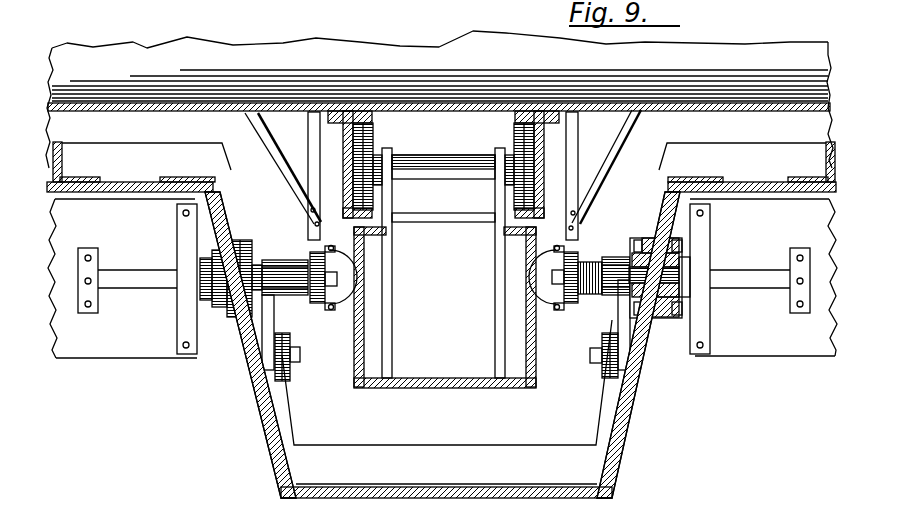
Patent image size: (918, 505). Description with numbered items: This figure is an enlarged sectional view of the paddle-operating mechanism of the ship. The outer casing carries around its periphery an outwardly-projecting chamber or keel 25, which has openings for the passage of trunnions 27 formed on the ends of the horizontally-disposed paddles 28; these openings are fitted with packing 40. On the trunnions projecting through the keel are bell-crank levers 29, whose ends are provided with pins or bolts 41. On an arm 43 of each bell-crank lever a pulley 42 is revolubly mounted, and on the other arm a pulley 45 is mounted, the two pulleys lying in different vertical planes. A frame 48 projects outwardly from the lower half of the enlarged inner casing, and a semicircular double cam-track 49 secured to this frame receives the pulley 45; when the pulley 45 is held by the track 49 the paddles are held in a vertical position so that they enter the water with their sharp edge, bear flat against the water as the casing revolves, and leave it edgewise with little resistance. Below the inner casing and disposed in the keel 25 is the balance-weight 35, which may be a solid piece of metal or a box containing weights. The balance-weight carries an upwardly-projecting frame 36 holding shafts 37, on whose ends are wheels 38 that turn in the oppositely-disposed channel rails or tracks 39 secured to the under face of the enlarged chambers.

The keel 25 is at (445, 486).
The trunnions 27 is at (634, 254).
The paddles 28 is at (442, 278).
The bell-crank levers 29 is at (623, 288).
The balance-weight 35 is at (449, 385).
The frame 36 is at (445, 307).
The shafts 37 is at (443, 256).
The wheels 38 is at (372, 131).
The channel rails 39 is at (443, 176).
The packing 40 is at (664, 314).
The pins 41 is at (596, 362).
The pulley 42 is at (292, 380).
The arm 43 is at (262, 322).
The pulley 45 is at (320, 301).
The frame 48 is at (615, 170).
The cam-track 49 is at (320, 252).